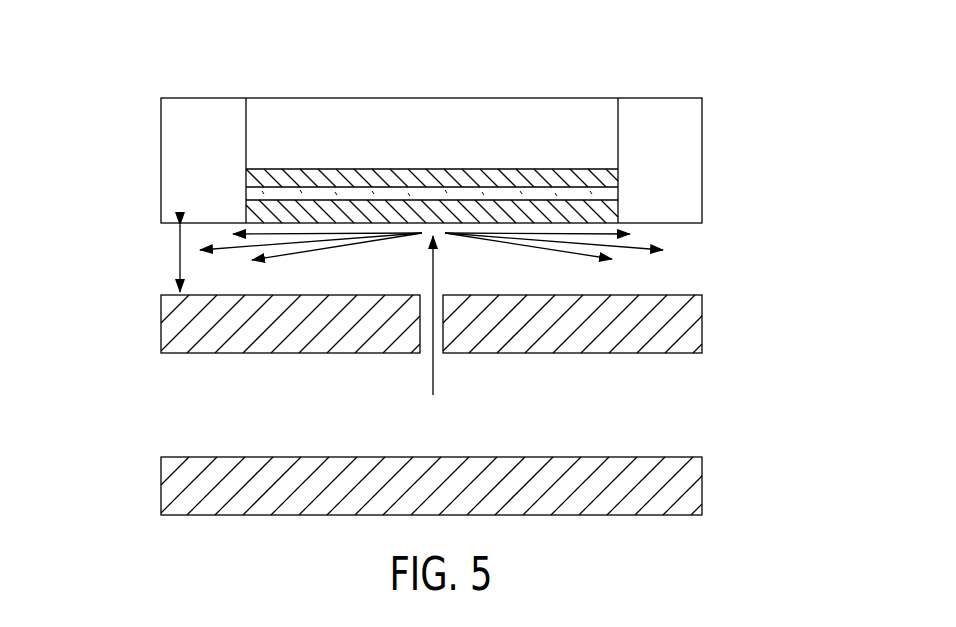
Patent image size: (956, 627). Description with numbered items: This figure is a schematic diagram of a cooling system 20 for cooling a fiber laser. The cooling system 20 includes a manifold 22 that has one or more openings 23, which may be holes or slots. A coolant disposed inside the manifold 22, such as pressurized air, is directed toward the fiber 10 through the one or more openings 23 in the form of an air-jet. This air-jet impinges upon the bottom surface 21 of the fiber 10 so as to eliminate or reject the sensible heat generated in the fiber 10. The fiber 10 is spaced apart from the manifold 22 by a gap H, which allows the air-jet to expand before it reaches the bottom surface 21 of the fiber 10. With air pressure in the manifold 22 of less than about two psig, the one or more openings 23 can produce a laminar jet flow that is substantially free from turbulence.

The fiber 10 is at (485, 164).
The cooling system 20 is at (499, 315).
The bottom surface 21 is at (591, 204).
The manifold 22 is at (162, 403).
The openings 23 is at (447, 291).
The gap H is at (180, 258).